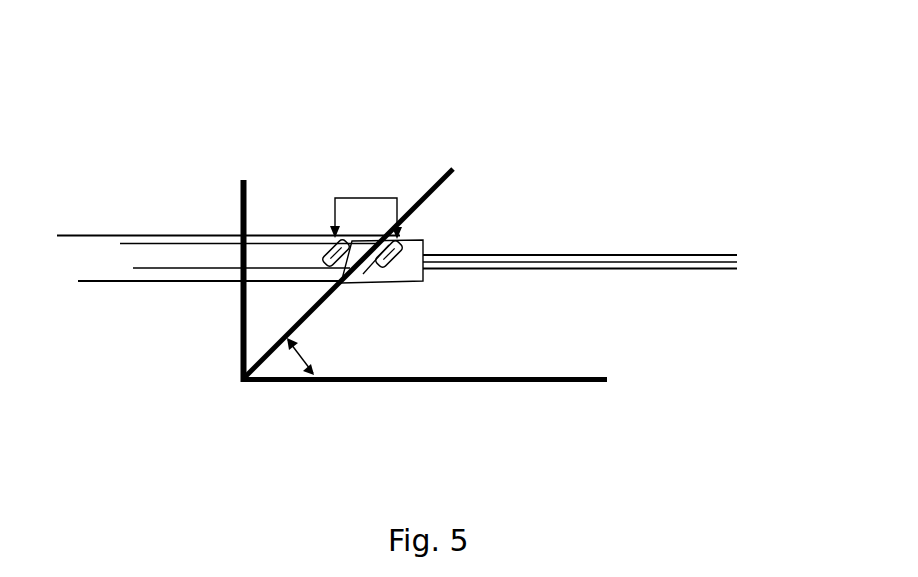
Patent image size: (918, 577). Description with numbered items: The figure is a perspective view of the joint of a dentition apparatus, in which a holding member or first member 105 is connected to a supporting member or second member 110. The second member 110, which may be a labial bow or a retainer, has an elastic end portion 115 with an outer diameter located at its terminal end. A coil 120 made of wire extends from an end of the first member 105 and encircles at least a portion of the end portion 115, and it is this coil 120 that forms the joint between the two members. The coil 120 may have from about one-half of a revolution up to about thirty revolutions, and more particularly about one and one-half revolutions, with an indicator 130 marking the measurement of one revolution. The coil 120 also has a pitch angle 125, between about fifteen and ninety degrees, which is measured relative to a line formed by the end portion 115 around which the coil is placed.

The first member 105 is at (617, 260).
The second member 110 is at (187, 235).
The end portion 115 is at (413, 238).
The coil 120 is at (367, 282).
The pitch angle 125 is at (298, 353).
The indicator 130 is at (368, 197).